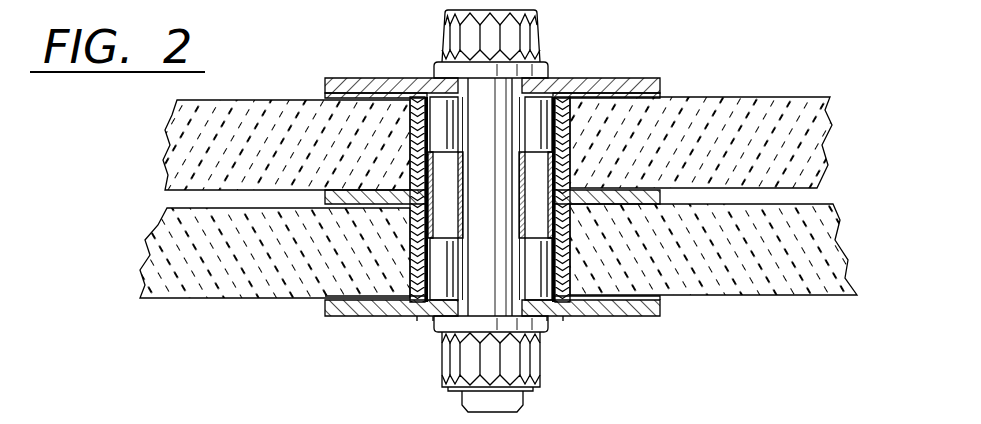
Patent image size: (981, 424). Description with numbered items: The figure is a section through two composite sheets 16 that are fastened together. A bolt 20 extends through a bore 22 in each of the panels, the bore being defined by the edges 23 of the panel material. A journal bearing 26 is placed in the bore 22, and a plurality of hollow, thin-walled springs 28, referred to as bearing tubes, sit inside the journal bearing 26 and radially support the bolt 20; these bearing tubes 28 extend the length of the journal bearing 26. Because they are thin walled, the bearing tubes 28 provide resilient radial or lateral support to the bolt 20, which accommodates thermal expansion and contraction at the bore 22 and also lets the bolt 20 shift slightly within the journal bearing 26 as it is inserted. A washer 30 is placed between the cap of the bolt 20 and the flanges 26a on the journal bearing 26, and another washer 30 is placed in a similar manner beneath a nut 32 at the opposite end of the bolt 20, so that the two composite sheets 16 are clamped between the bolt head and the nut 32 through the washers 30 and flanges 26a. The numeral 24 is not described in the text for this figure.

The composite sheets 16 is at (183, 145).
The bolt 20 is at (508, 118).
The bore 22 is at (412, 143).
The edges 23 is at (331, 207).
The right sleeve segment 24 is at (577, 146).
The journal bearing 26 is at (409, 262).
The flanges 26a is at (318, 97).
The springs (bearing tubes) 28 is at (550, 314).
The washer 30 is at (397, 78).
The nut 32 is at (538, 367).